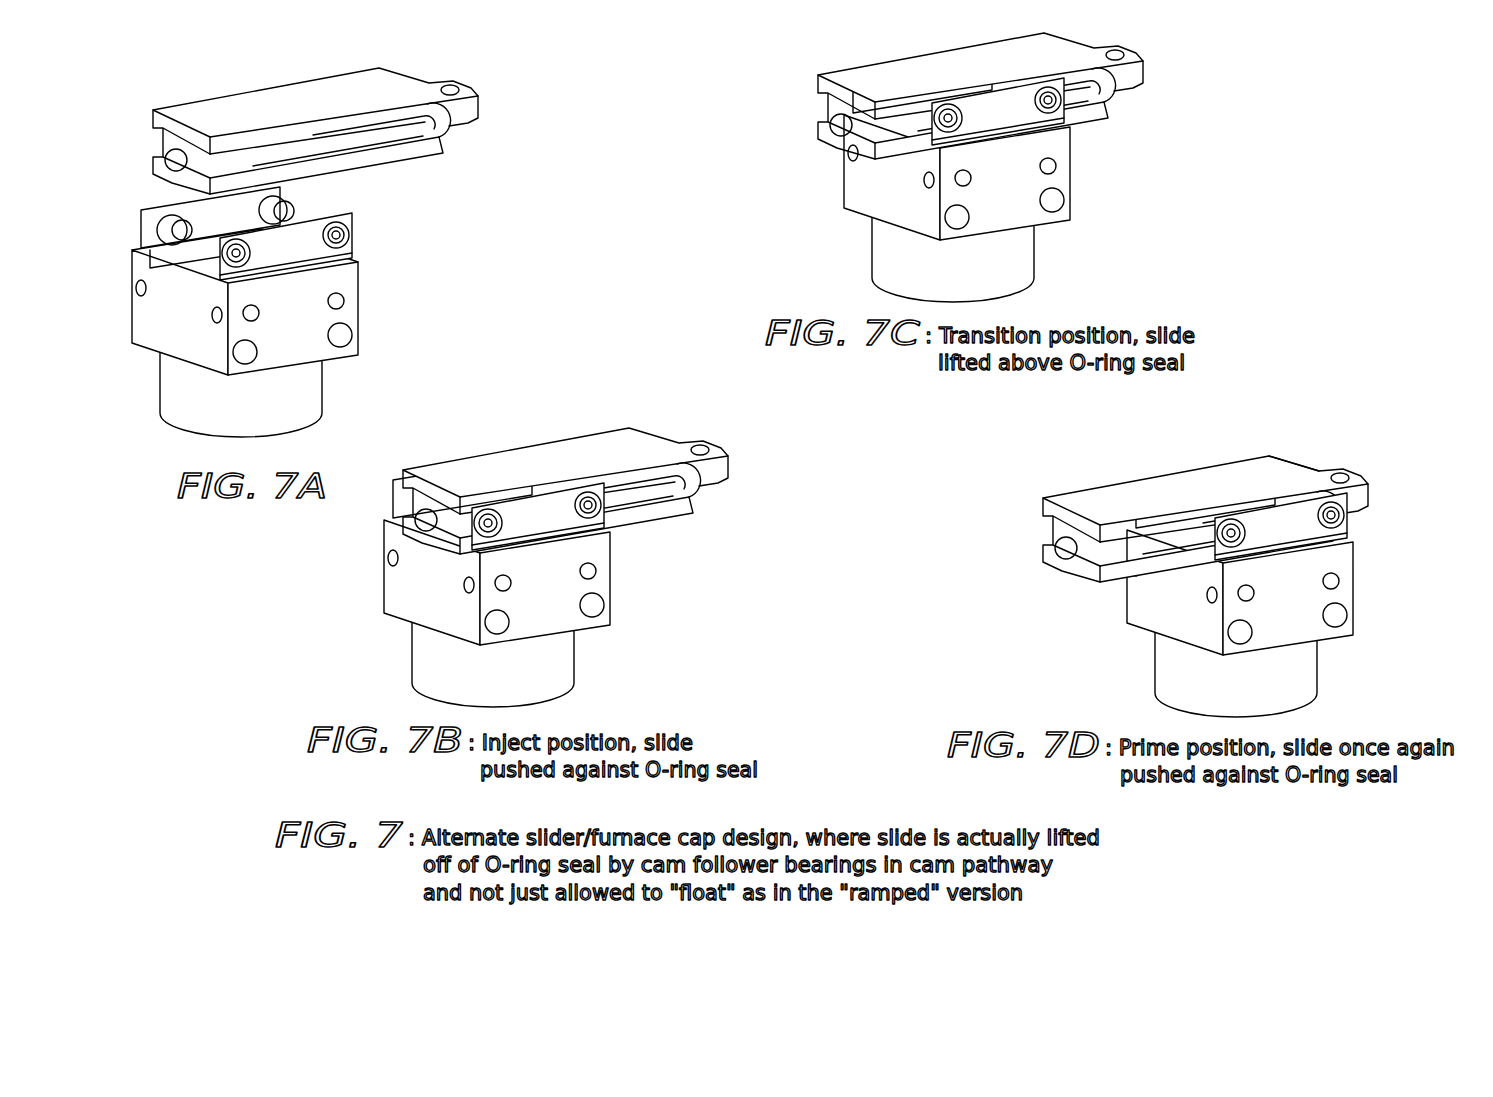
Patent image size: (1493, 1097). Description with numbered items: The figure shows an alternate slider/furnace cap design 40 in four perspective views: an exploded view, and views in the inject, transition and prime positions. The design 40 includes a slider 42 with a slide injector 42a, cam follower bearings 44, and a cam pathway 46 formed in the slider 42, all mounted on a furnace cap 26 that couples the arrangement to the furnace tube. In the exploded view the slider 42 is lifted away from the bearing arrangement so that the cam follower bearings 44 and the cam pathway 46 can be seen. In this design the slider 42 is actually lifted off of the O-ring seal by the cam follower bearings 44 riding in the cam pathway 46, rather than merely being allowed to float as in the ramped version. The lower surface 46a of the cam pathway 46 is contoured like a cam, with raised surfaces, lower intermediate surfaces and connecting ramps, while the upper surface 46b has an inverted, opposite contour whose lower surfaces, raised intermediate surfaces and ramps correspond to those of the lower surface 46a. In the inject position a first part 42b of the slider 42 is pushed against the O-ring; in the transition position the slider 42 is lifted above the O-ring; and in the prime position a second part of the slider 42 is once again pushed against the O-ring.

In FIG. 7A, the furnace cap 26 is at (363, 298).
In FIG. 7B, the furnace cap 26 is at (547, 618).
In FIG. 7A, the alternate slider/furnace cap design 40 is at (157, 88).
In FIG. 7A, the slider 42 is at (388, 88).
In FIG. 7B, the slider 42 is at (637, 443).
In FIG. 7D, the slider 42 is at (1290, 472).
In FIG. 7A, the slide injector 42a is at (478, 103).
In FIG. 7B, the slide injector 42a is at (517, 460).
In FIG. 7D, the first part of the slider 42b is at (1243, 483).
In FIG. 7A, the cam follower bearings 44 is at (352, 218).
In FIG. 7B, the cam follower bearings 44 is at (502, 528).
In FIG. 7D, the cam follower bearings 44 is at (1348, 523).
In FIG. 7A, the cam pathway 46 is at (340, 143).
In FIG. 7B, the cam pathway 46 is at (625, 494).
In FIG. 7D, the cam pathway 46 is at (1142, 547).
In FIG. 7A, the lower surface of the cam pathway 46a is at (410, 157).
In FIG. 7A, the upper surface of the cam pathway 46b is at (430, 127).